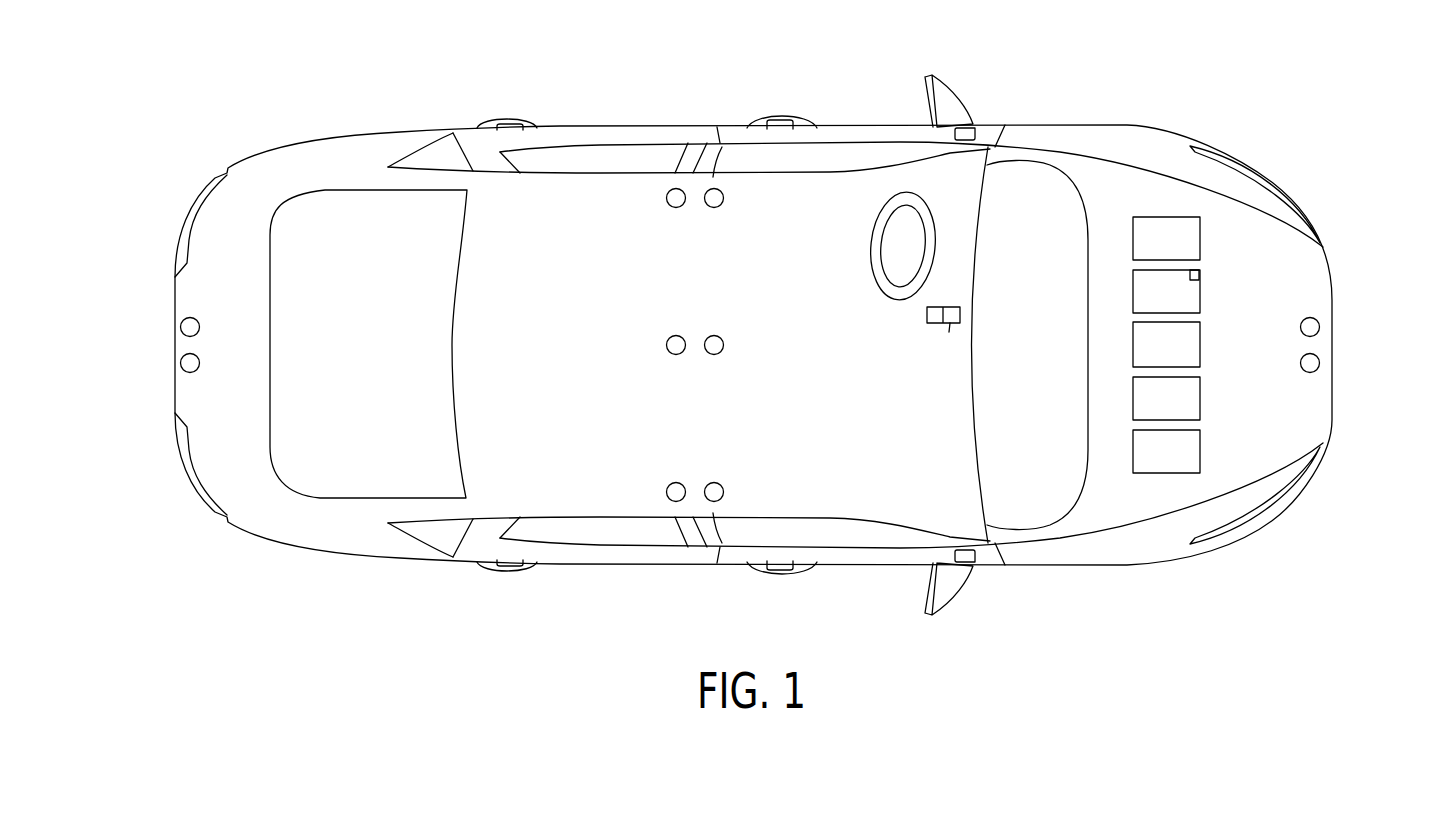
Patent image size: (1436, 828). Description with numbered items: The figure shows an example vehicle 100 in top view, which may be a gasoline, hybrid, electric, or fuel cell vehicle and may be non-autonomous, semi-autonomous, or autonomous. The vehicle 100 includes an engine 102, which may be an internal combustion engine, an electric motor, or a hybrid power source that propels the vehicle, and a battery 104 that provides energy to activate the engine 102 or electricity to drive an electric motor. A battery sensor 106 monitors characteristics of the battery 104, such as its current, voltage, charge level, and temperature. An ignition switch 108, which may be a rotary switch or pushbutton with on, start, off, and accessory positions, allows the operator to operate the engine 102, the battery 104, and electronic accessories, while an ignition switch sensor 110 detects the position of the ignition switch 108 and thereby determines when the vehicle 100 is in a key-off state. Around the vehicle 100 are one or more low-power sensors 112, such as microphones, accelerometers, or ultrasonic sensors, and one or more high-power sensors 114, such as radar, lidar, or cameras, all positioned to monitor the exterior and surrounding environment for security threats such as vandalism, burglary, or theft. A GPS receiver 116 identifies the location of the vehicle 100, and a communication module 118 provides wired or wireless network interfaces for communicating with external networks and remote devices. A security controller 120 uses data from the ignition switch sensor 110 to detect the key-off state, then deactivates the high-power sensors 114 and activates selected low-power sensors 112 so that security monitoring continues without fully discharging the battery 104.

The vehicle 100 is at (1132, 125).
The engine 102 is at (1185, 252).
The battery 104 is at (1185, 305).
The battery sensor 106 is at (1199, 276).
The ignition switch 108 is at (927, 314).
The ignition switch sensor 110 is at (949, 332).
The low-power sensors 112 is at (676, 207).
The high-power sensors 114 is at (714, 207).
The global positioning system (GPS) receiver 116 is at (1185, 358).
The communication module 118 is at (1185, 412).
The security controller 120 is at (1185, 465).